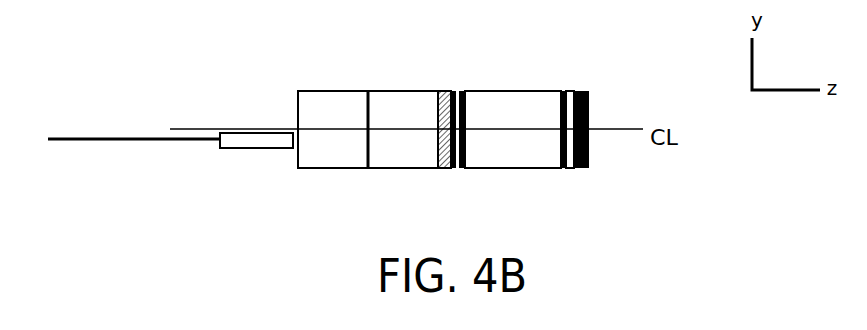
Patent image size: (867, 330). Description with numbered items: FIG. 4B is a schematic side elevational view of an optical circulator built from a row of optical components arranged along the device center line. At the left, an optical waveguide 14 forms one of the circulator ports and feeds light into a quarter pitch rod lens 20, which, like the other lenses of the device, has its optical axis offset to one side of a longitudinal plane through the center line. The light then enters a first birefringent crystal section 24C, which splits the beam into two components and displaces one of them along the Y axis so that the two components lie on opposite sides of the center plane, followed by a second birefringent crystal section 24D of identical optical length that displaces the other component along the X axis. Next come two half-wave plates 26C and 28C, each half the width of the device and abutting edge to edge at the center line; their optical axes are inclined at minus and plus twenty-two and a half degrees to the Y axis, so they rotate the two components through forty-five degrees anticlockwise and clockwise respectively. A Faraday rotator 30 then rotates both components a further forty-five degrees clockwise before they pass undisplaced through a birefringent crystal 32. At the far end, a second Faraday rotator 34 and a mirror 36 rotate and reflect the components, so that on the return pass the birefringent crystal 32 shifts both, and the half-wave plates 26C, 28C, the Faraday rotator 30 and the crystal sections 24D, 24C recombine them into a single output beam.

The optical waveguide 14 is at (138, 138).
The lens 20 is at (252, 130).
The first birefringent crystal section 24C is at (325, 107).
The second birefringent crystal section 24D is at (400, 98).
The half-wave plate 26C is at (442, 90).
The half-wave plate 28C is at (442, 170).
The Faraday rotator 30 is at (458, 170).
The birefringent crystal 32 is at (507, 95).
The Faraday rotator 34 is at (570, 90).
The mirror 36 is at (588, 102).